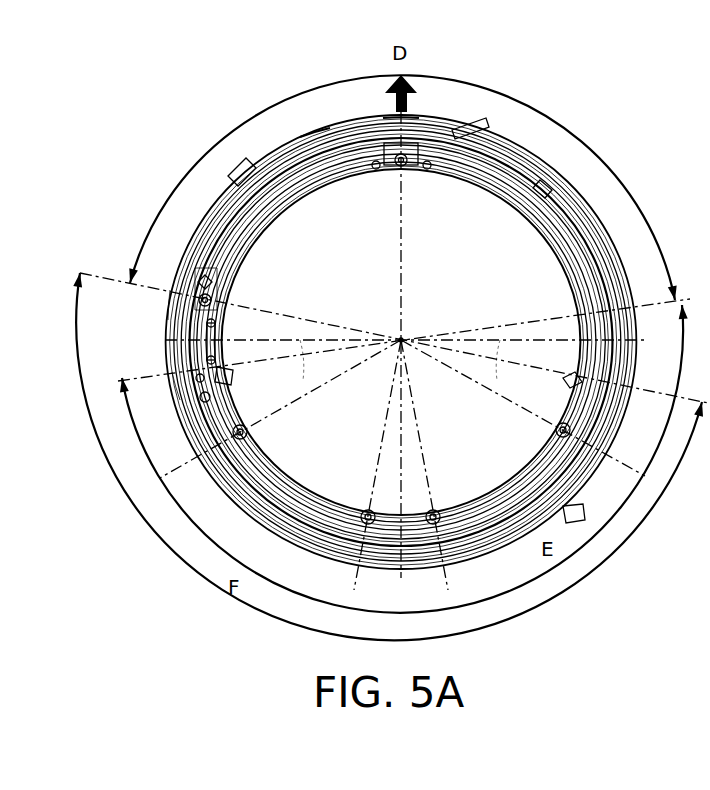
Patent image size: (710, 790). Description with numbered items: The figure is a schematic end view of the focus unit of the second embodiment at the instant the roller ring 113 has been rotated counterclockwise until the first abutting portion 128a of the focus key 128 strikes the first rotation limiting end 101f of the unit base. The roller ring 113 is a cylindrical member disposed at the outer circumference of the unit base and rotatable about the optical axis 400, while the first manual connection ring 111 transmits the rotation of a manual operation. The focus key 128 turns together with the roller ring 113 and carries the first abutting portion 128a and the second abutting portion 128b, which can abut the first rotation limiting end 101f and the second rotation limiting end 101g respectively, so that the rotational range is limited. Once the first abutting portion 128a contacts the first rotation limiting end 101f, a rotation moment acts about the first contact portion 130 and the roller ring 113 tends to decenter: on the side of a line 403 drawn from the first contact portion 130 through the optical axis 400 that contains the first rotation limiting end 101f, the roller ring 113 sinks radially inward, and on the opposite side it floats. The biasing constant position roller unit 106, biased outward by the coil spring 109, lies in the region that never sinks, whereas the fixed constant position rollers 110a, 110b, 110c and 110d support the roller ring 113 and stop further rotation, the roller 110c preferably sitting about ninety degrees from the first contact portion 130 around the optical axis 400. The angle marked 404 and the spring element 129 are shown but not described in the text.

The biasing constant position roller unit 106 is at (380, 140).
The coil spring 109 is at (396, 172).
The first manual connection ring 111 is at (265, 168).
The roller ring 113 is at (312, 135).
The focus key 128 is at (185, 318).
The first abutting portion 128a is at (218, 340).
The second abutting portion 128b is at (215, 285).
The biasing spring 129 is at (170, 297).
The first contact portion 130 is at (225, 360).
The first rotation limiting end 101f is at (225, 372).
The second rotation limiting end 101g is at (563, 378).
The fixed constant position roller 110a is at (236, 440).
The fixed constant position roller 110b is at (572, 432).
The fixed constant position roller 110c is at (438, 525).
The fixed constant position roller 110d is at (367, 525).
The optical axis 400 is at (396, 336).
The line 403 is at (312, 358).
The rotation angle 404 is at (489, 357).